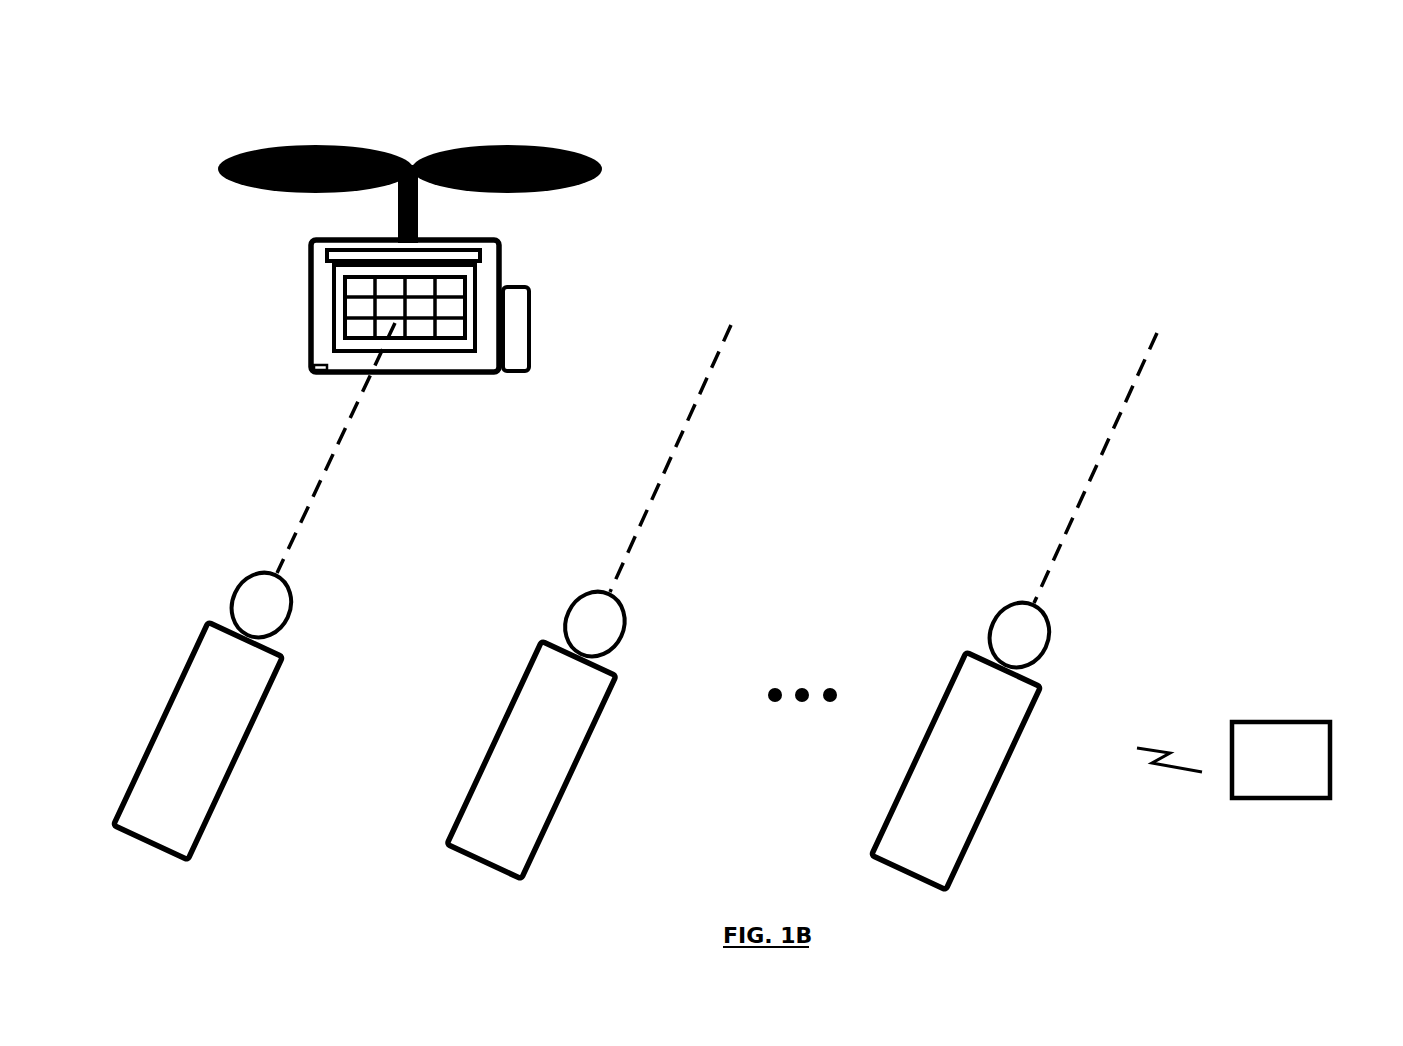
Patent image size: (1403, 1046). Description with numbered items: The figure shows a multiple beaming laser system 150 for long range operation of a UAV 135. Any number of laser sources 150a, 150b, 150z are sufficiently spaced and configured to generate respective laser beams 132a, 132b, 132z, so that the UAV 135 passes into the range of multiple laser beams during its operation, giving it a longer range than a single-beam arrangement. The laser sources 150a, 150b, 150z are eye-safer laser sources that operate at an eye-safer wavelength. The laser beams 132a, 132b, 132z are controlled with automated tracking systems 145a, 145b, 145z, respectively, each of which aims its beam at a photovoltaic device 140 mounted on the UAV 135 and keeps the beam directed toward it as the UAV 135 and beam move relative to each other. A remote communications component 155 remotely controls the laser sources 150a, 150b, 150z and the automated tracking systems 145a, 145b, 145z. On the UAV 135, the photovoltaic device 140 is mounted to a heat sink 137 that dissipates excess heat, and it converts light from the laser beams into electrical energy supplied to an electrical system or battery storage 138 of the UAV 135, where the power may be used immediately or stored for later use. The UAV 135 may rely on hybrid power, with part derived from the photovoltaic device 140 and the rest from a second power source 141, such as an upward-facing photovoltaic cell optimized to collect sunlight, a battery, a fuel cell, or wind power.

The UAV 135 is at (430, 382).
The heat sink 137 is at (483, 259).
The photovoltaic device 140 is at (330, 312).
The second power source 141 is at (530, 338).
The battery storage 138 is at (321, 374).
The laser beam 132a is at (324, 475).
The laser beam 132b is at (648, 509).
The laser beam 132z is at (1074, 519).
The automated tracking system 145a is at (293, 611).
The automated tracking system 145b is at (627, 634).
The automated tracking system 145z is at (1052, 644).
The laser source 150a is at (267, 718).
The laser source 150b is at (600, 740).
The laser source 150z is at (1024, 752).
The multiple beaming laser system 150 is at (914, 105).
The remote communications component 155 is at (1330, 745).